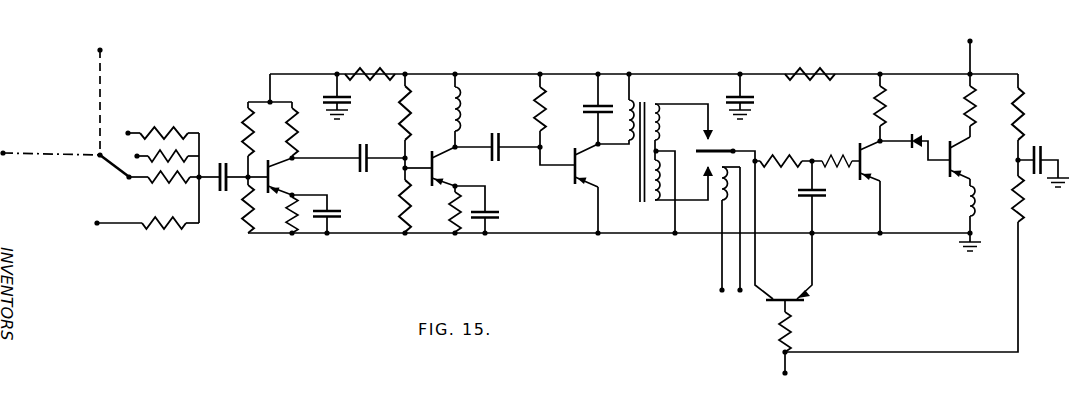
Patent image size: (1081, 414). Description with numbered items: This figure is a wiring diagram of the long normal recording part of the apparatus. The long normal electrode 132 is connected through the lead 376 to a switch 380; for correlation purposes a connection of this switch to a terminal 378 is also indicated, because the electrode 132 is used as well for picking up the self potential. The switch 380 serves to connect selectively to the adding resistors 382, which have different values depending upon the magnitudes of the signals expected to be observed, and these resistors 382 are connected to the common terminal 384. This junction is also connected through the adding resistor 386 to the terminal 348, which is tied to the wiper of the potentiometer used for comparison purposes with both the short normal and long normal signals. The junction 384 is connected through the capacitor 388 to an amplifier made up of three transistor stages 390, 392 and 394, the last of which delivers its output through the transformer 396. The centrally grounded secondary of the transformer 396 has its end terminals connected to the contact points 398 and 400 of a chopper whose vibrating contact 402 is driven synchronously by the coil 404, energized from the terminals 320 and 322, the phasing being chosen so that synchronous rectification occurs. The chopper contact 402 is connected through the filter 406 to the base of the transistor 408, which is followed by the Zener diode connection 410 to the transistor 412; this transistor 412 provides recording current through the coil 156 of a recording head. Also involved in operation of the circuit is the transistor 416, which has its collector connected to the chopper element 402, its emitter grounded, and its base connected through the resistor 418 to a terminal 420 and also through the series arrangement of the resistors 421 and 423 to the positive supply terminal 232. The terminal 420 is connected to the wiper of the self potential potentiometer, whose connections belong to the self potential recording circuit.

The long normal electrode 132 is at (3, 152).
The terminal 378 is at (100, 50).
The lead 376 is at (98, 156).
The switch 380 is at (124, 173).
The adding resistors 382 is at (167, 177).
The common terminal 384 is at (200, 175).
The terminal 348 is at (97, 224).
The adding resistor 386 is at (152, 228).
The capacitor 388 is at (226, 188).
The transistor stage 390 is at (346, 223).
The transistor stage 392 is at (498, 238).
The transistor stage 394 is at (607, 222).
The transformer 396 is at (646, 91).
The contact point 398 is at (709, 136).
The contact point 400 is at (706, 168).
The vibrating contact 402 is at (717, 150).
The coil 404 is at (721, 200).
The terminal 320 is at (722, 289).
The terminal 322 is at (740, 292).
The filter 406 is at (813, 151).
The transistor 408 is at (866, 184).
The Zener diode connection 410 is at (920, 135).
The transistor 412 is at (963, 153).
The coil 156 is at (965, 213).
The positive supply terminal 232 is at (970, 42).
The resistor 423 is at (1020, 120).
The resistor 421 is at (1020, 222).
The transistor 416 is at (805, 306).
The resistor 418 is at (790, 330).
The terminal 420 is at (784, 374).